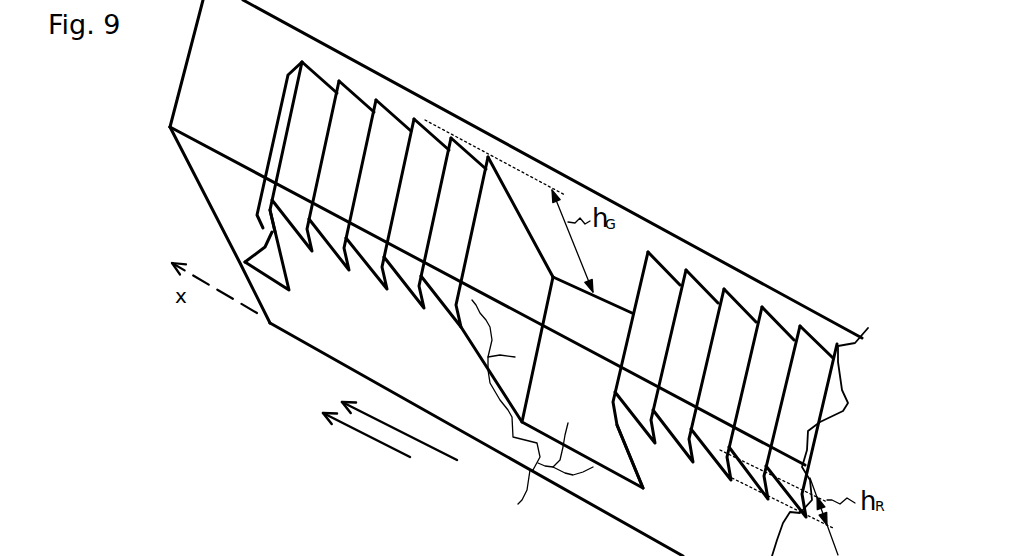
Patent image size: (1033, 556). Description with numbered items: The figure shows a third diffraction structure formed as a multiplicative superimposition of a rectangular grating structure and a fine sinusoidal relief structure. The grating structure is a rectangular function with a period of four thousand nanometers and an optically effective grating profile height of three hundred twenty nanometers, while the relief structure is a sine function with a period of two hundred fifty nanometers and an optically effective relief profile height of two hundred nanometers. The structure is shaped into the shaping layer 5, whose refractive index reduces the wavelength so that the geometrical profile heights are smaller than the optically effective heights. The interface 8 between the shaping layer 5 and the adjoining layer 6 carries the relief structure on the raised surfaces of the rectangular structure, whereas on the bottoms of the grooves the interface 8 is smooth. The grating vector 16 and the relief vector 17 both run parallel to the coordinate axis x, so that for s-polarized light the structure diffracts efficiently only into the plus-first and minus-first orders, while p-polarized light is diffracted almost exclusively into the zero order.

The shaping layer 5 is at (385, 242).
The layer 6 is at (725, 384).
The interface 8 is at (557, 405).
The grating vector 16 is at (399, 470).
The relief vector 17 is at (360, 475).